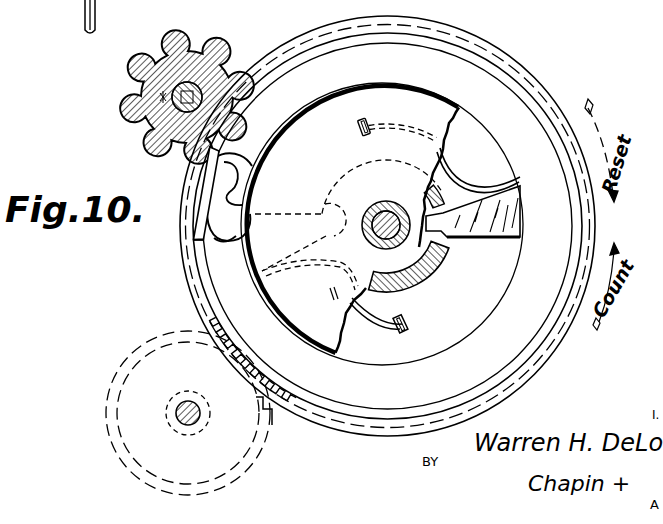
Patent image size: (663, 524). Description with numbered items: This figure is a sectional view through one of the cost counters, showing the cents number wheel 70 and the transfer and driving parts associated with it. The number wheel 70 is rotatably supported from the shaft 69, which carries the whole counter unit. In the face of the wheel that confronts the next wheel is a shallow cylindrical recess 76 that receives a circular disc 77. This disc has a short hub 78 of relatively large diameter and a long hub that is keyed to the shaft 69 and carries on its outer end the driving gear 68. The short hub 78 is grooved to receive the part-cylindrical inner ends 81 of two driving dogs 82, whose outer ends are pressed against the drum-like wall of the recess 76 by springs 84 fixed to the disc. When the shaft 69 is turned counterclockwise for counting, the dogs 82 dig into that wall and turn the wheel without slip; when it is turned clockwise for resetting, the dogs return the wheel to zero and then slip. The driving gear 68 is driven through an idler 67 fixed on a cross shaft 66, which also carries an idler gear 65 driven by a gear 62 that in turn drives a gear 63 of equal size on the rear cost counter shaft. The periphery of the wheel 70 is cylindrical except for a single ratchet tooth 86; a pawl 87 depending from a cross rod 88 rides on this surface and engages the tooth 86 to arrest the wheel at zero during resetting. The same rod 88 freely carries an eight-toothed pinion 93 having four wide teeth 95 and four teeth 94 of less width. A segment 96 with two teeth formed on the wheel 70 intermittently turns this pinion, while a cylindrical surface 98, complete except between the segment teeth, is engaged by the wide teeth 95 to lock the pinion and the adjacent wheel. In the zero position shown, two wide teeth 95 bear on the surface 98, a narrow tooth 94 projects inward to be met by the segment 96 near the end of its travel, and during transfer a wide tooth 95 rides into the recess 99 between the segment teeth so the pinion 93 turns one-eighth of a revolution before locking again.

The gear 62 is at (470, 240).
The gear 63 is at (441, 149).
The idler gear 65 is at (478, 55).
The cross shaft 66 is at (180, 421).
The idler 67 is at (113, 400).
The driving gear 68 is at (285, 405).
The shaft 69 is at (388, 202).
The number wheel 70 is at (487, 91).
The cylindrical recess 76 is at (382, 224).
The circular disc 77 is at (353, 219).
The short hub 78 is at (426, 272).
The part-cylindrical inner ends 81 is at (340, 204).
The driving dogs 82 is at (305, 213).
The springs 84 is at (460, 183).
The ratchet tooth 86 is at (199, 243).
The pawl 87 is at (195, 223).
The cross rod 88 is at (180, 76).
The pinion 93 is at (151, 89).
The teeth of less width 94 is at (230, 34).
The wide teeth 95 is at (258, 92).
The segment 96 is at (227, 248).
The cylindrical surface 98 is at (497, 73).
The recess 99 is at (262, 166).